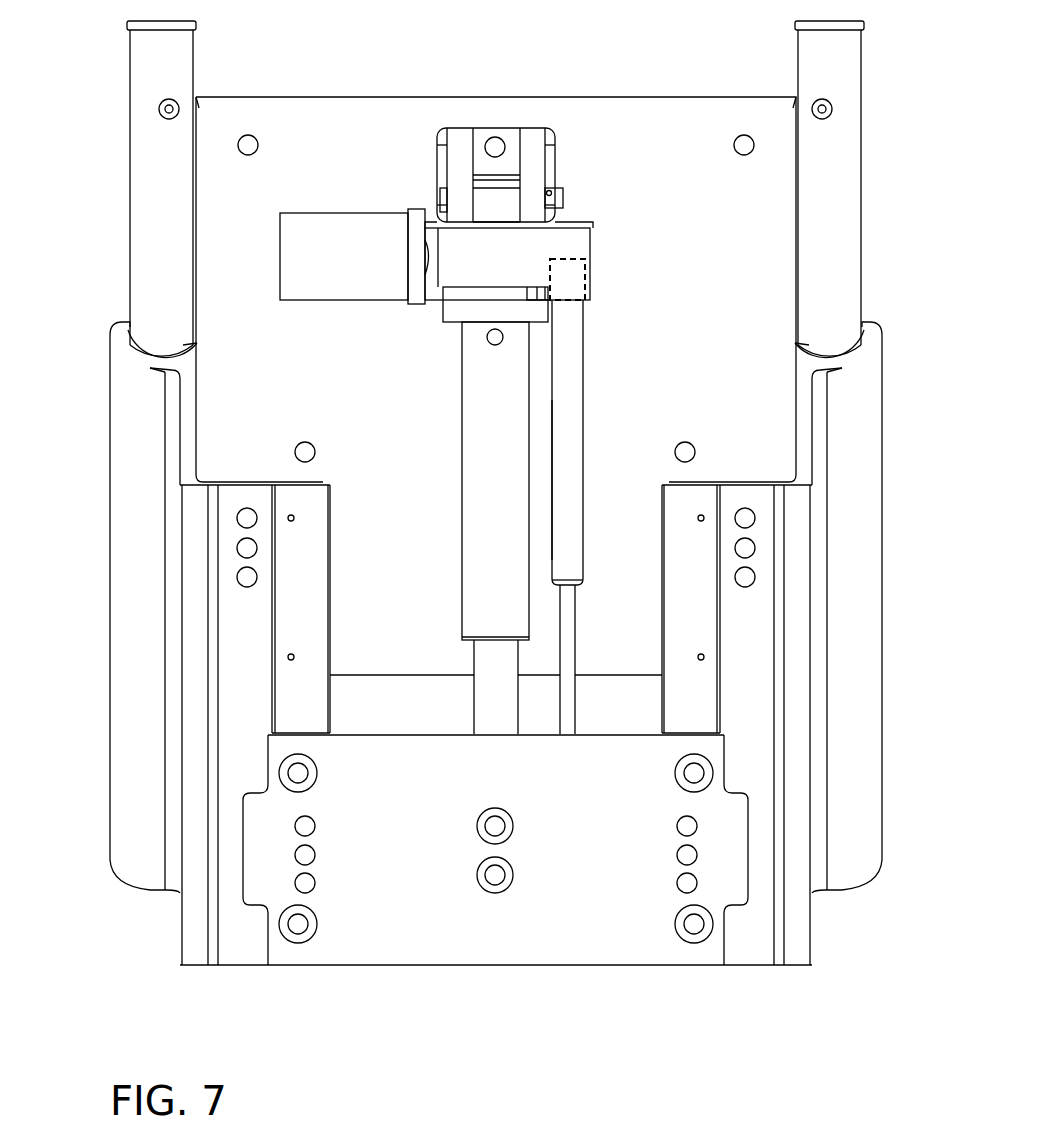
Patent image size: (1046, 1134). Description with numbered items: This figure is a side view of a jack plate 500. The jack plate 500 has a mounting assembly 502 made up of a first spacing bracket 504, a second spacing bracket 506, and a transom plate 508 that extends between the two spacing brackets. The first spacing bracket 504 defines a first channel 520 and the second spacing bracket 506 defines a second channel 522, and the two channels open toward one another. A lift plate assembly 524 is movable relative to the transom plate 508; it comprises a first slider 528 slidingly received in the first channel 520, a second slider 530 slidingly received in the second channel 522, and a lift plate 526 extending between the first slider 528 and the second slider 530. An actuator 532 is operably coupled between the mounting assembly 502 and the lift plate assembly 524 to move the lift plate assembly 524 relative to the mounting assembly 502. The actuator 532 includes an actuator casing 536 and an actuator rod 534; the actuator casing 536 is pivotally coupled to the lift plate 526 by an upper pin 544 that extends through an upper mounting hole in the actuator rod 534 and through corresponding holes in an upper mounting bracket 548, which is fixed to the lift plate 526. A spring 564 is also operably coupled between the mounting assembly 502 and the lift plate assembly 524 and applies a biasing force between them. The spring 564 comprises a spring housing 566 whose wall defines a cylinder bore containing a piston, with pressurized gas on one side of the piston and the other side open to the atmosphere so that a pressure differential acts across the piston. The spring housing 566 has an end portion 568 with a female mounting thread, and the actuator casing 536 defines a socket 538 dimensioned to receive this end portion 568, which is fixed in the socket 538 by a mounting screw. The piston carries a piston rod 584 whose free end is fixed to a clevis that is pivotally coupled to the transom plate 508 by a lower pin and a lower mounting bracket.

The jack plate 500 is at (358, 1027).
The mounting assembly 502 is at (451, 975).
The first spacing bracket 504 is at (136, 878).
The second spacing bracket 506 is at (855, 882).
The transom plate 508 is at (558, 965).
The first channel 520 is at (146, 355).
The second channel 522 is at (846, 355).
The lift plate assembly 524 is at (708, 84).
The lift plate 526 is at (268, 96).
The first slider 528 is at (128, 232).
The second slider 530 is at (862, 268).
The actuator 532 is at (462, 558).
The actuator rod 534 is at (474, 715).
The actuator casing 536 is at (465, 302).
The socket 538 is at (585, 280).
The upper pin 544 is at (562, 190).
The upper mounting bracket 548 is at (442, 160).
The spring 564 is at (585, 380).
The spring housing 566 is at (584, 482).
The end portion 568 is at (565, 272).
The piston rod 584 is at (576, 715).